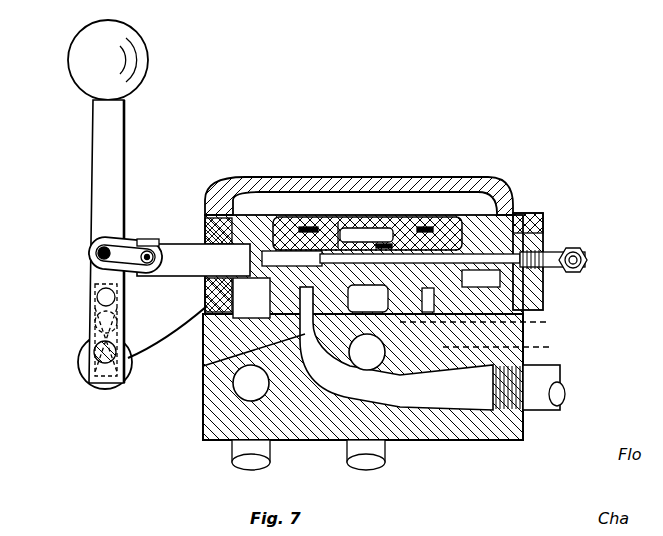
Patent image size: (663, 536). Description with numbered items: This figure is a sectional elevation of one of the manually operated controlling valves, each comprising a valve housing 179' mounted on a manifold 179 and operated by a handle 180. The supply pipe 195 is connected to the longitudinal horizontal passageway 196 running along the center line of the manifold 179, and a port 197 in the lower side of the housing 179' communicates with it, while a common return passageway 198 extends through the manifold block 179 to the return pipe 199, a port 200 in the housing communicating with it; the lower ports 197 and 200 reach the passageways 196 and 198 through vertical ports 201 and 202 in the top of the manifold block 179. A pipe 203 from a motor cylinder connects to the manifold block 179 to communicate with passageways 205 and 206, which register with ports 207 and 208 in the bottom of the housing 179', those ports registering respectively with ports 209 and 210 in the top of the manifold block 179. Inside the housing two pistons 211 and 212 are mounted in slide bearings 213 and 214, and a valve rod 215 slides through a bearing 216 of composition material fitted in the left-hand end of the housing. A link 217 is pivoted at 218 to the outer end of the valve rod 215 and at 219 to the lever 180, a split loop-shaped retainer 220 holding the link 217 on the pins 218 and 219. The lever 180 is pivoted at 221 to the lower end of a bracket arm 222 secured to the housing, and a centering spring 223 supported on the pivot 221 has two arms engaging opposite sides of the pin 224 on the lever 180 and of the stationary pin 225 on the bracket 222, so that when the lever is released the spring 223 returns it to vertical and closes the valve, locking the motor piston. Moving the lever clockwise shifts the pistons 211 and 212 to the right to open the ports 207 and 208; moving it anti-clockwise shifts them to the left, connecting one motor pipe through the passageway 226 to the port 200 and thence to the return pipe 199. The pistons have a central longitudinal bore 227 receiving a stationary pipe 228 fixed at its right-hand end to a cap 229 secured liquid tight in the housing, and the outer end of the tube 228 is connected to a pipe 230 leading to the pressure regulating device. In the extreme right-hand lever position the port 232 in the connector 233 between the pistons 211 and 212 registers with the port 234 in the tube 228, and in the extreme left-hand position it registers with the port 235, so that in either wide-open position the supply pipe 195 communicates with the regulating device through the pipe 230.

The manifold 179 is at (326, 379).
The valve housing 179' is at (369, 157).
The handle 180 is at (118, 118).
The supply pipe 195 is at (385, 456).
The longitudinal horizontal passageway 196 is at (373, 353).
The port 197 is at (372, 326).
The return passageway 198 is at (250, 390).
The return pipe 199 is at (240, 458).
The port 200 is at (247, 287).
The vertical port 201 is at (509, 387).
The vertical port 202 is at (225, 336).
The pipe 203 is at (541, 400).
The passageway 205 is at (330, 388).
The passageway 206 is at (505, 322).
The port 207 is at (307, 233).
The port 208 is at (500, 286).
The port 209 is at (203, 366).
The port 210 is at (489, 324).
The piston 211 is at (340, 230).
The piston 212 is at (403, 240).
The slide bearing 213 is at (293, 238).
The slide bearing 214 is at (470, 243).
The valve rod 215 is at (176, 240).
The bearing 216 is at (217, 216).
The link 217 is at (151, 250).
The pivot pin 218 is at (147, 240).
The pivot pin 219 is at (100, 251).
The split loop-shaped retainer 220 is at (103, 249).
The pivot 221 is at (90, 383).
The bracket arm 222 is at (193, 277).
The spring 223 is at (98, 348).
The pin 224 is at (104, 292).
The stationary pin 225 is at (100, 311).
The passageway 226 is at (537, 233).
The central longitudinal bore 227 is at (282, 252).
The stationary pipe 228 is at (492, 237).
The cap 229 is at (543, 247).
The pipe 230 is at (587, 257).
The port 232 is at (390, 240).
The connector 233 is at (360, 238).
The port 234 is at (412, 242).
The port 235 is at (332, 236).